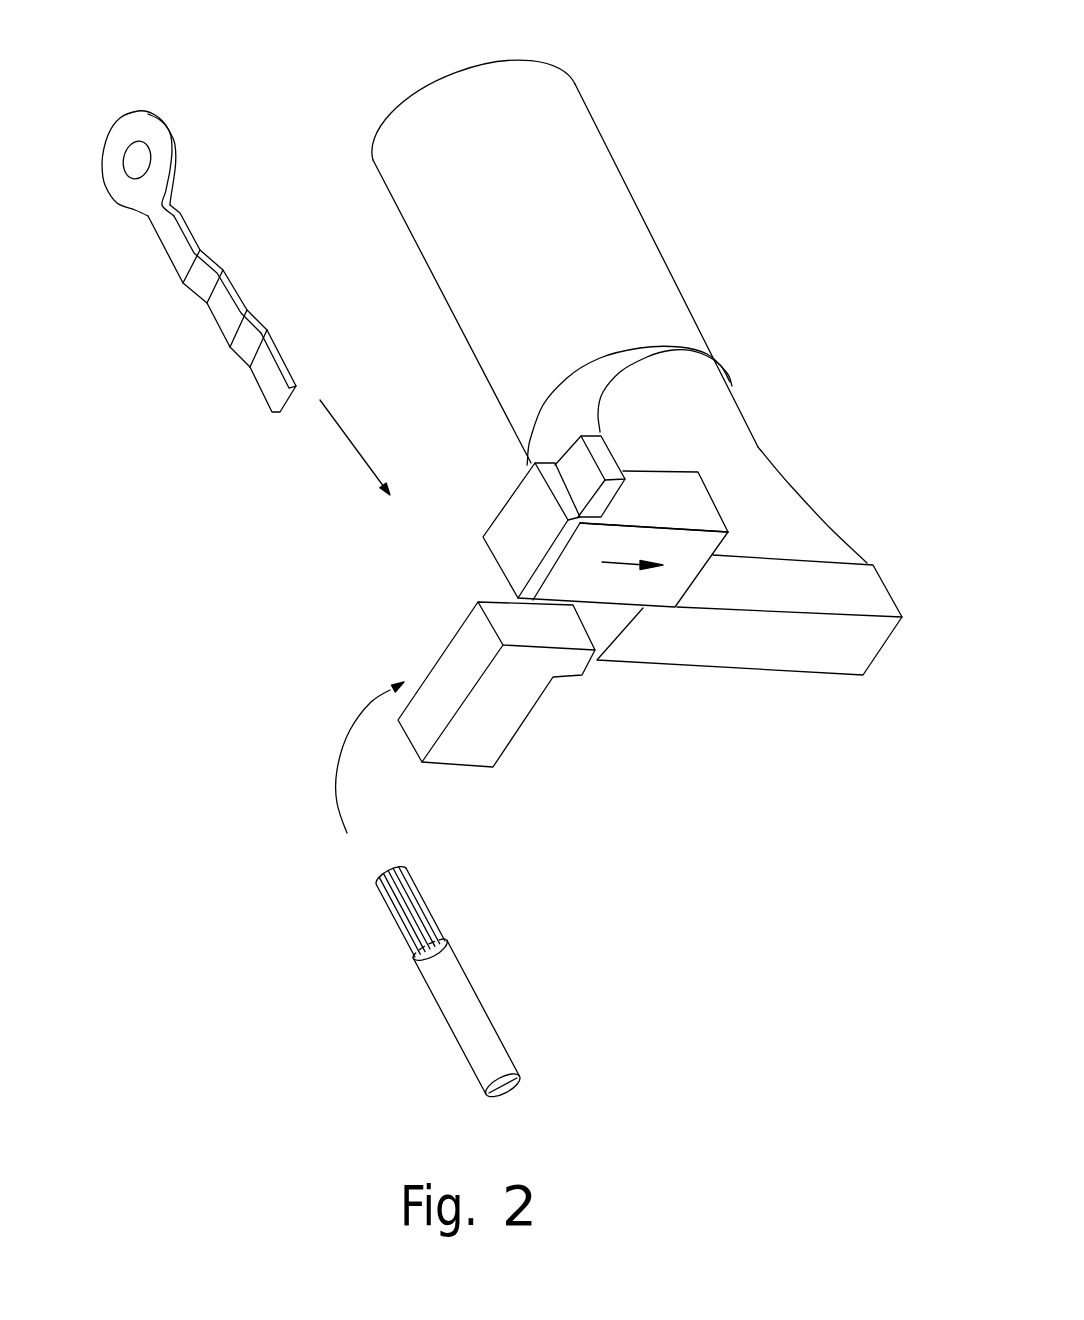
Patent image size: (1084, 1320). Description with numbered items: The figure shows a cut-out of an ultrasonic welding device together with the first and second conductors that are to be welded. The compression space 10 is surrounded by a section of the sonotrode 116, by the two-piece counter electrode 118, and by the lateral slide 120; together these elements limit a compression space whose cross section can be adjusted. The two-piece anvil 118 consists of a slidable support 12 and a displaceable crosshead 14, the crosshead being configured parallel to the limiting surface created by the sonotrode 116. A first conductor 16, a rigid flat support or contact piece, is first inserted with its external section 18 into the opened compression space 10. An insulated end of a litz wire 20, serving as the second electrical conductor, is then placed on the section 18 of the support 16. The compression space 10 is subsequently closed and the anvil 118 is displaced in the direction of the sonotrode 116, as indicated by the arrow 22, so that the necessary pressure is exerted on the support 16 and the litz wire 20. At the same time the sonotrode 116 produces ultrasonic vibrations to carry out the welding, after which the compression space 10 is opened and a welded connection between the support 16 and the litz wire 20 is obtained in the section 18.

The compression space 10 is at (528, 718).
The slidable support 12 is at (675, 495).
The displaceable crosshead 14 is at (580, 467).
The first conductor 16 is at (168, 218).
The external section 18 is at (270, 367).
The litz wire 20 is at (400, 915).
The arrow 22 is at (623, 565).
The sonotrode 116 is at (847, 593).
The counter electrode 118 is at (693, 513).
The slide 120 is at (483, 742).